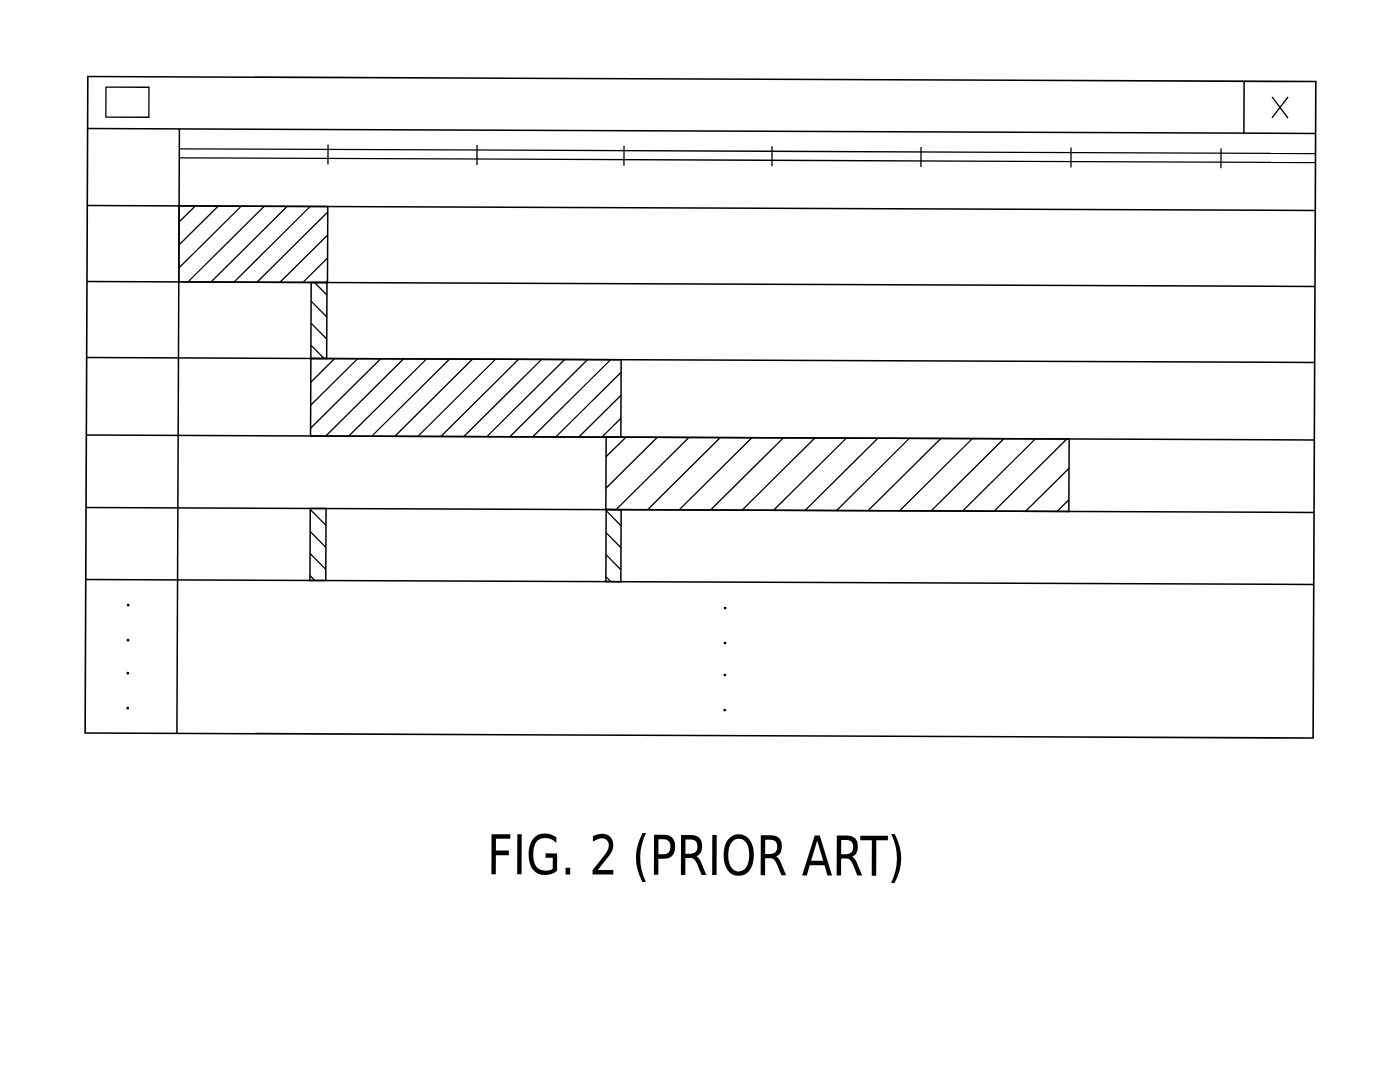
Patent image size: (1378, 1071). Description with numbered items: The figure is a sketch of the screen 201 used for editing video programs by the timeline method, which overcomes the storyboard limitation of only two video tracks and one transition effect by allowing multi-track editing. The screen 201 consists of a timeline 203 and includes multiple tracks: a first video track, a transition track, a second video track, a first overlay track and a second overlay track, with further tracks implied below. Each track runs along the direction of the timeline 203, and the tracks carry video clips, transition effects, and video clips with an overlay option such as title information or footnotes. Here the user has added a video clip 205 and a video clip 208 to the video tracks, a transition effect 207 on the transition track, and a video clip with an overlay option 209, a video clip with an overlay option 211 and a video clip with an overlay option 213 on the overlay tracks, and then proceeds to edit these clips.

The screen 201 is at (134, 824).
The timeline 203 is at (1268, 150).
The video clip 205 is at (236, 229).
The transition effect 207 is at (319, 317).
The video clip 208 is at (449, 583).
The video clip with an overlay option 209 is at (853, 499).
The video clip with an overlay option 211 is at (314, 579).
The video clip with an overlay option 213 is at (613, 583).